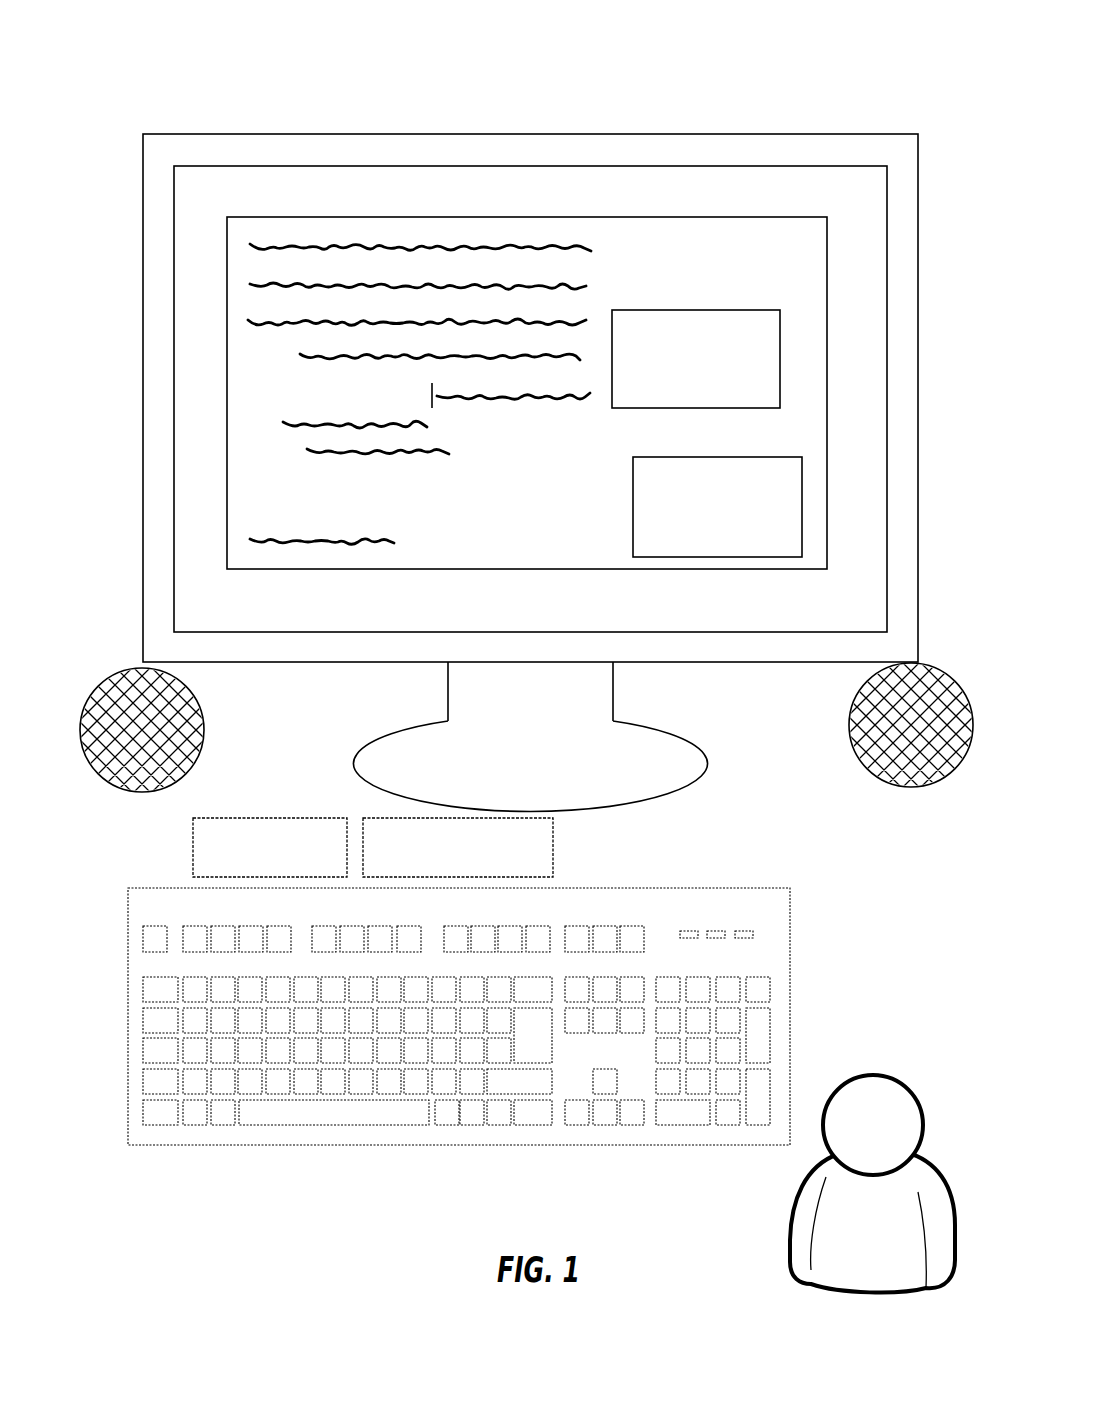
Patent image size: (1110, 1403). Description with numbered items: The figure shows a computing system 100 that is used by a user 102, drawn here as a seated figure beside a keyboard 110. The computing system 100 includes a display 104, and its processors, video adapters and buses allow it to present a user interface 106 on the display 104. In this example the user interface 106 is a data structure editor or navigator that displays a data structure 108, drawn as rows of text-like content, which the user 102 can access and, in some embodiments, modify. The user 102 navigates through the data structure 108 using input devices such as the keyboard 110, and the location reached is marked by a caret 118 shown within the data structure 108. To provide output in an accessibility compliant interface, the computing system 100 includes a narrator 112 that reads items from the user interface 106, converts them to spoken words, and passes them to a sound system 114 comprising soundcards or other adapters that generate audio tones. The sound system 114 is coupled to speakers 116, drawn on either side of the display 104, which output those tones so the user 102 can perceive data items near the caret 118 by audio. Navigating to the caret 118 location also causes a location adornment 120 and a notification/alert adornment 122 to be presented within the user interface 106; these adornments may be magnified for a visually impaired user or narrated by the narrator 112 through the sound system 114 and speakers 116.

The computing system 100 is at (655, 94).
The user 102 is at (790, 1215).
The display 104 is at (700, 134).
The user interface 106 is at (580, 217).
The data structure 108 is at (617, 266).
The keyboard 110 is at (805, 860).
The narrator 112 is at (553, 850).
The sound system 114 is at (193, 846).
The speaker 116 is at (118, 673).
The caret 118 is at (440, 410).
The location adornment 120 is at (625, 310).
The notification/alert adornment 122 is at (633, 525).